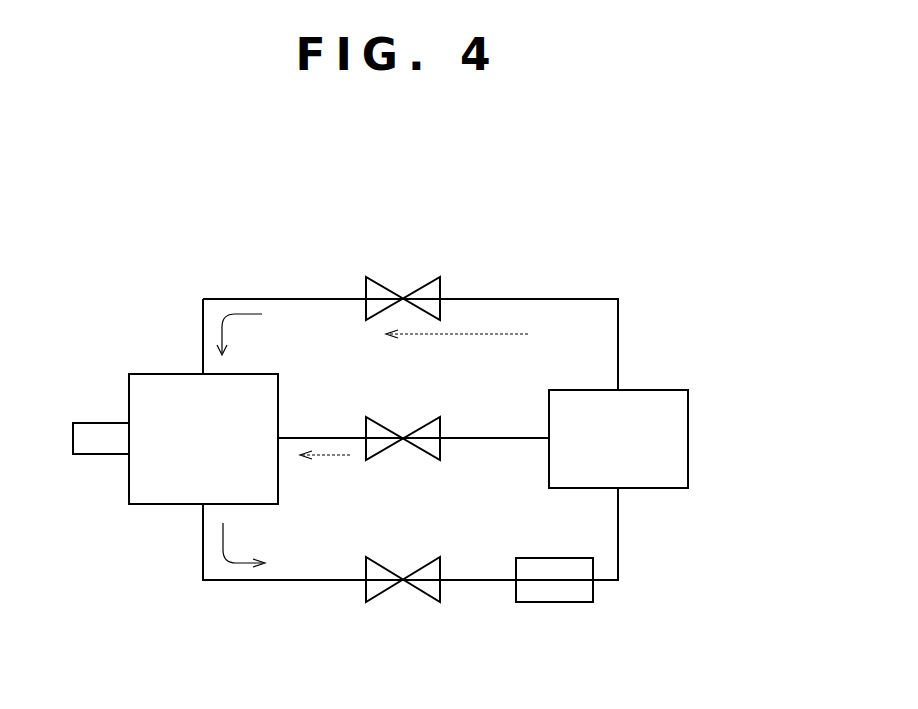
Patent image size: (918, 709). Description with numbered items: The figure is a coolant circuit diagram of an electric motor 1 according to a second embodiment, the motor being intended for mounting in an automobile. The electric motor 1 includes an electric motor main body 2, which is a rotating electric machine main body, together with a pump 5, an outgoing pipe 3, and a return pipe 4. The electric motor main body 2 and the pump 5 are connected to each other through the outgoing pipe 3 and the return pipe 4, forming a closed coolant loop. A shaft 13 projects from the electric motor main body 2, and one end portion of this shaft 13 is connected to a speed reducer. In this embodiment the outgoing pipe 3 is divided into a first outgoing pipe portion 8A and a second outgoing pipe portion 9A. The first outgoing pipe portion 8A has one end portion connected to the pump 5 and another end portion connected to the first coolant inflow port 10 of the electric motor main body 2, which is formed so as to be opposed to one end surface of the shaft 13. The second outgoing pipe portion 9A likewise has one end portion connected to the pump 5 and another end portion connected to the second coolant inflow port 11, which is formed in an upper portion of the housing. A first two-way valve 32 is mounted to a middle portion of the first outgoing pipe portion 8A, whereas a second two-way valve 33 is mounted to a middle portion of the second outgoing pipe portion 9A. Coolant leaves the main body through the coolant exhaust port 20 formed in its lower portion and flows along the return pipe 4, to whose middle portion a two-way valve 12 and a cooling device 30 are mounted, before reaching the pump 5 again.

The electric motor 1 is at (688, 306).
The electric motor main body 2 is at (147, 506).
The outgoing pipe 3 is at (555, 353).
The return pipe 4 is at (243, 582).
The pump 5 is at (688, 437).
The first outgoing pipe portion 8A is at (492, 437).
The second outgoing pipe portion 9A is at (558, 297).
The first coolant inflow port 10 is at (280, 440).
The second coolant inflow port 11 is at (200, 372).
The two-way valve 12 is at (410, 583).
The shaft 13 is at (98, 422).
The coolant exhaust port 20 is at (202, 506).
The cooling device 30 is at (552, 604).
The first two-way valve 32 is at (408, 430).
The second two-way valve 33 is at (408, 292).